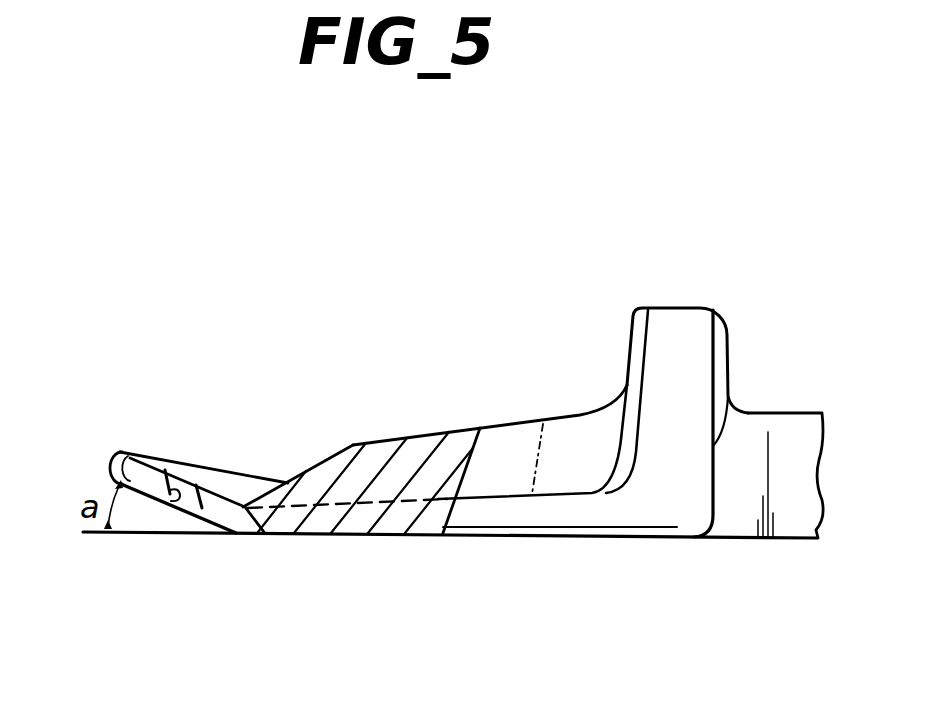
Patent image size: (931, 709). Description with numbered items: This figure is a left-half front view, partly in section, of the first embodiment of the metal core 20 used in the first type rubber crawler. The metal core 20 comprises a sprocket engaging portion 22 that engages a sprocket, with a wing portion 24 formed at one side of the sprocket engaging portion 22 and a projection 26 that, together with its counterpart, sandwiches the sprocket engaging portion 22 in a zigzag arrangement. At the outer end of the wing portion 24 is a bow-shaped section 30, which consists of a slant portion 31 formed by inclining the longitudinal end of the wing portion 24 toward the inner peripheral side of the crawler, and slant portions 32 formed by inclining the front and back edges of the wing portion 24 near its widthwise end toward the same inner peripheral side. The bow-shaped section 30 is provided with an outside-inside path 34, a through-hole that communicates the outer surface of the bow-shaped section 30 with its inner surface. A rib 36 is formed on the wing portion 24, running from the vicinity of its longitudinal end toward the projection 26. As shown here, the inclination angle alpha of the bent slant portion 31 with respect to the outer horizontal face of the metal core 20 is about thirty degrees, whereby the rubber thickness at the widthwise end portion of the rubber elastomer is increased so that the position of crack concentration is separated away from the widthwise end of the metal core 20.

The metal core 20 is at (438, 430).
The sprocket engaging portion 22 is at (793, 412).
The wing portion 24 is at (518, 515).
The projection 26 is at (679, 318).
The bow-shaped section 30 is at (116, 452).
The slant portion 31 is at (203, 530).
The slant portions 32 is at (243, 483).
The outside-inside path 34 is at (166, 496).
The rib 36 is at (573, 410).